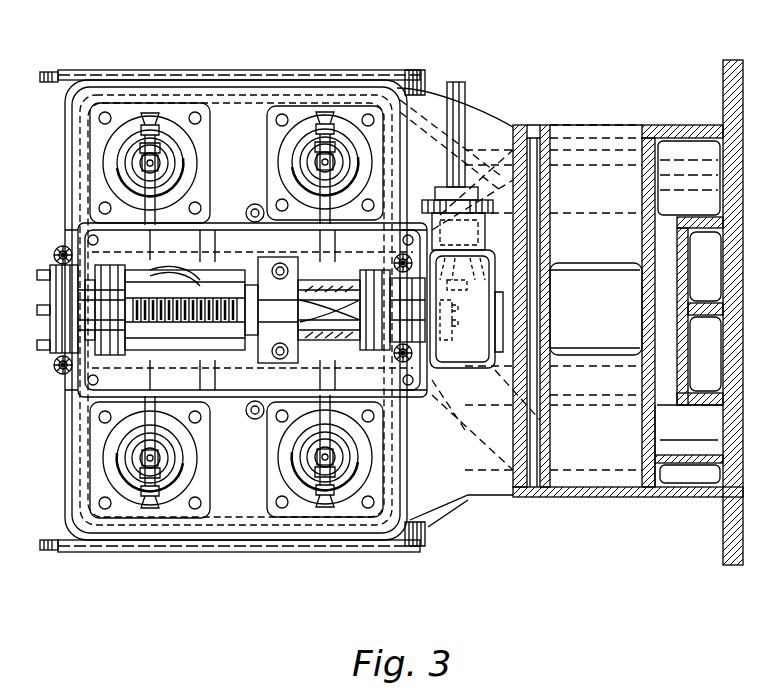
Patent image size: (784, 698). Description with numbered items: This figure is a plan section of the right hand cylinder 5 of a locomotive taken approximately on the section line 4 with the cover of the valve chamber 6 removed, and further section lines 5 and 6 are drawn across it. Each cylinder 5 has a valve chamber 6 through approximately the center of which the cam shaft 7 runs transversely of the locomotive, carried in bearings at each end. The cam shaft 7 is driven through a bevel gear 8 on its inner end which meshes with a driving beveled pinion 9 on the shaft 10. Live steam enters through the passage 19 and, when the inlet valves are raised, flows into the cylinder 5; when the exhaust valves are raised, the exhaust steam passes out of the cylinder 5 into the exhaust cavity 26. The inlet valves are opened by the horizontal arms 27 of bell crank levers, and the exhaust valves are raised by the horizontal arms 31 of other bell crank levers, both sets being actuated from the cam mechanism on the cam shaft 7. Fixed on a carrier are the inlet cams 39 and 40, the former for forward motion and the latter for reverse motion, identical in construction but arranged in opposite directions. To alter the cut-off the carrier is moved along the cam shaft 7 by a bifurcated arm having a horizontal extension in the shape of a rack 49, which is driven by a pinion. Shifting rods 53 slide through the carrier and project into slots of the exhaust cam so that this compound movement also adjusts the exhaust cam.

The section line 4- 4 is at (13, 284).
The cylinder 5 is at (165, 38).
The valve chamber 6 is at (341, 38).
The cam shaft 7 is at (410, 395).
The bevel gear 8 is at (446, 345).
The driving beveled pinion 9 is at (466, 290).
The shaft 10 is at (455, 114).
The passage 19 is at (596, 152).
The exhaust cavity 26 is at (690, 422).
The horizontal arm 27 is at (150, 197).
The horizontal arm 31 is at (325, 202).
The inlet cam 39 is at (210, 340).
The inlet cam 40 is at (145, 338).
The rack 49 is at (175, 285).
The shifting rods 53 is at (332, 290).